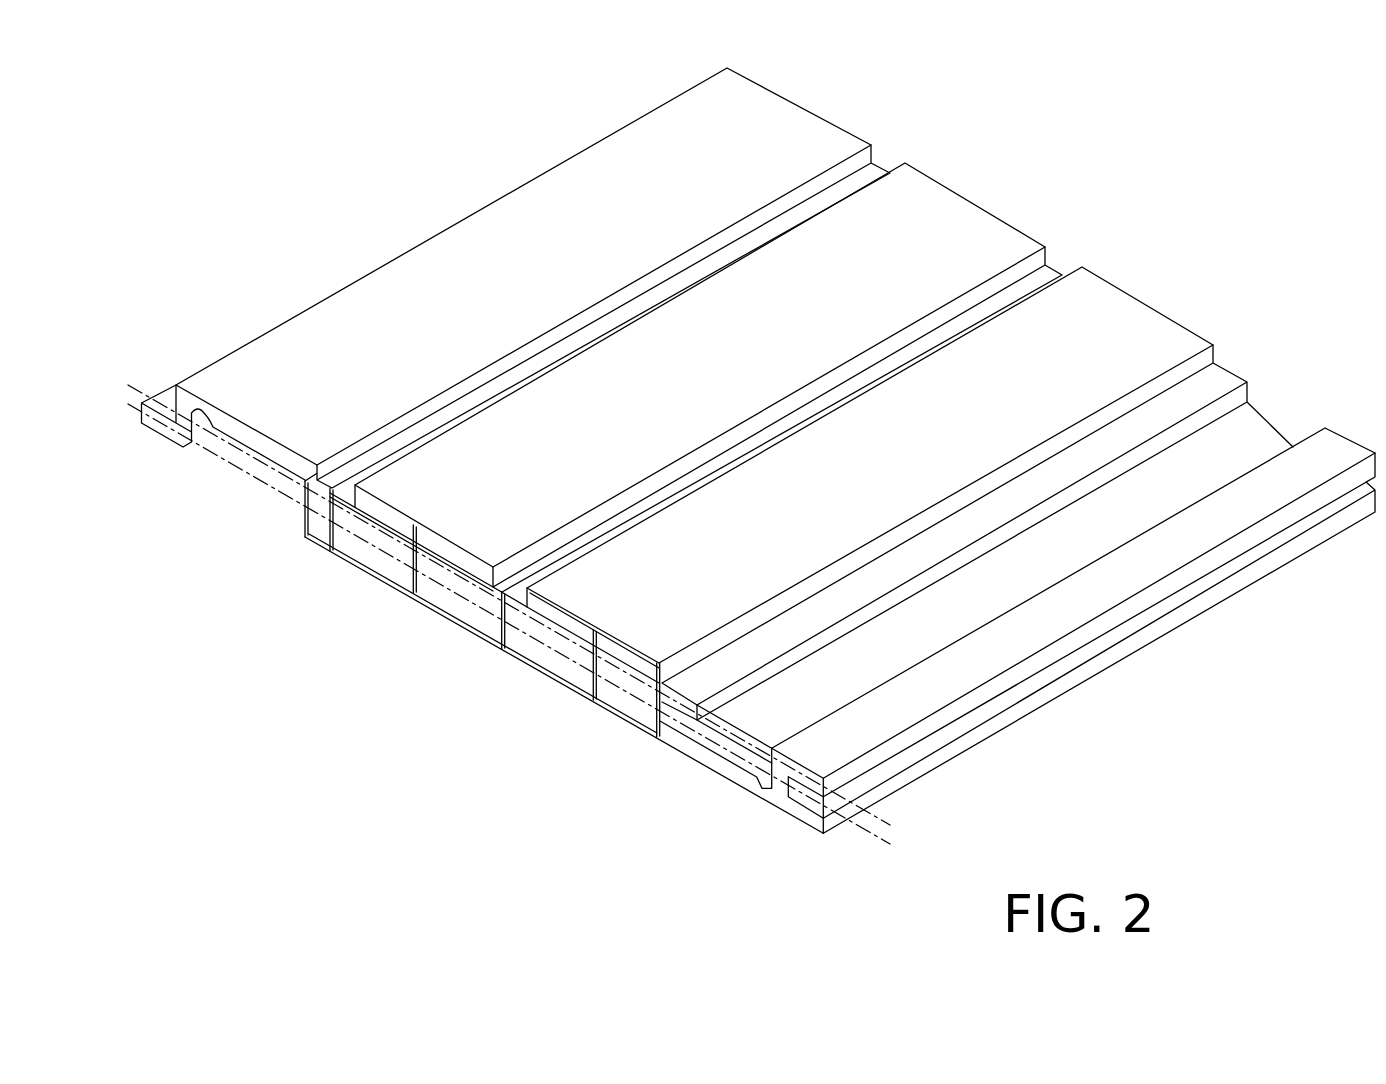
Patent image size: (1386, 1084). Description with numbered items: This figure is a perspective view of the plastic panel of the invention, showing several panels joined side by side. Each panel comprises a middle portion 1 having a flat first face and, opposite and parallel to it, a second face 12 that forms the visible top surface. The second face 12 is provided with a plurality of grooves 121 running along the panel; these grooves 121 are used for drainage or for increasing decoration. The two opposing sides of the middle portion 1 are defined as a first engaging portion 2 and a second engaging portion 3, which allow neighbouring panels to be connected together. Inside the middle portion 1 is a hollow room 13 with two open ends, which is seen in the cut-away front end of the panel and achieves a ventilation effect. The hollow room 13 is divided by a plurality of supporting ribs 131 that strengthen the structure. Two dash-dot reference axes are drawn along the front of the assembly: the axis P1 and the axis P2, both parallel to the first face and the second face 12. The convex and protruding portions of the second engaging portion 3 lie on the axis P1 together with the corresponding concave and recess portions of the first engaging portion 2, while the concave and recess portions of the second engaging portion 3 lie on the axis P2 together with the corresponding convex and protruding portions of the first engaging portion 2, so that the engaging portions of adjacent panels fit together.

The middle portion 1 is at (456, 654).
The first engaging portion 2 is at (701, 786).
The second engaging portion 3 is at (216, 507).
The second face 12 is at (1140, 335).
The grooves 121 is at (868, 177).
The hollow room 13 is at (558, 666).
The supporting ribs 131 is at (600, 690).
The axis P1 is at (528, 642).
The axis P2 is at (529, 615).